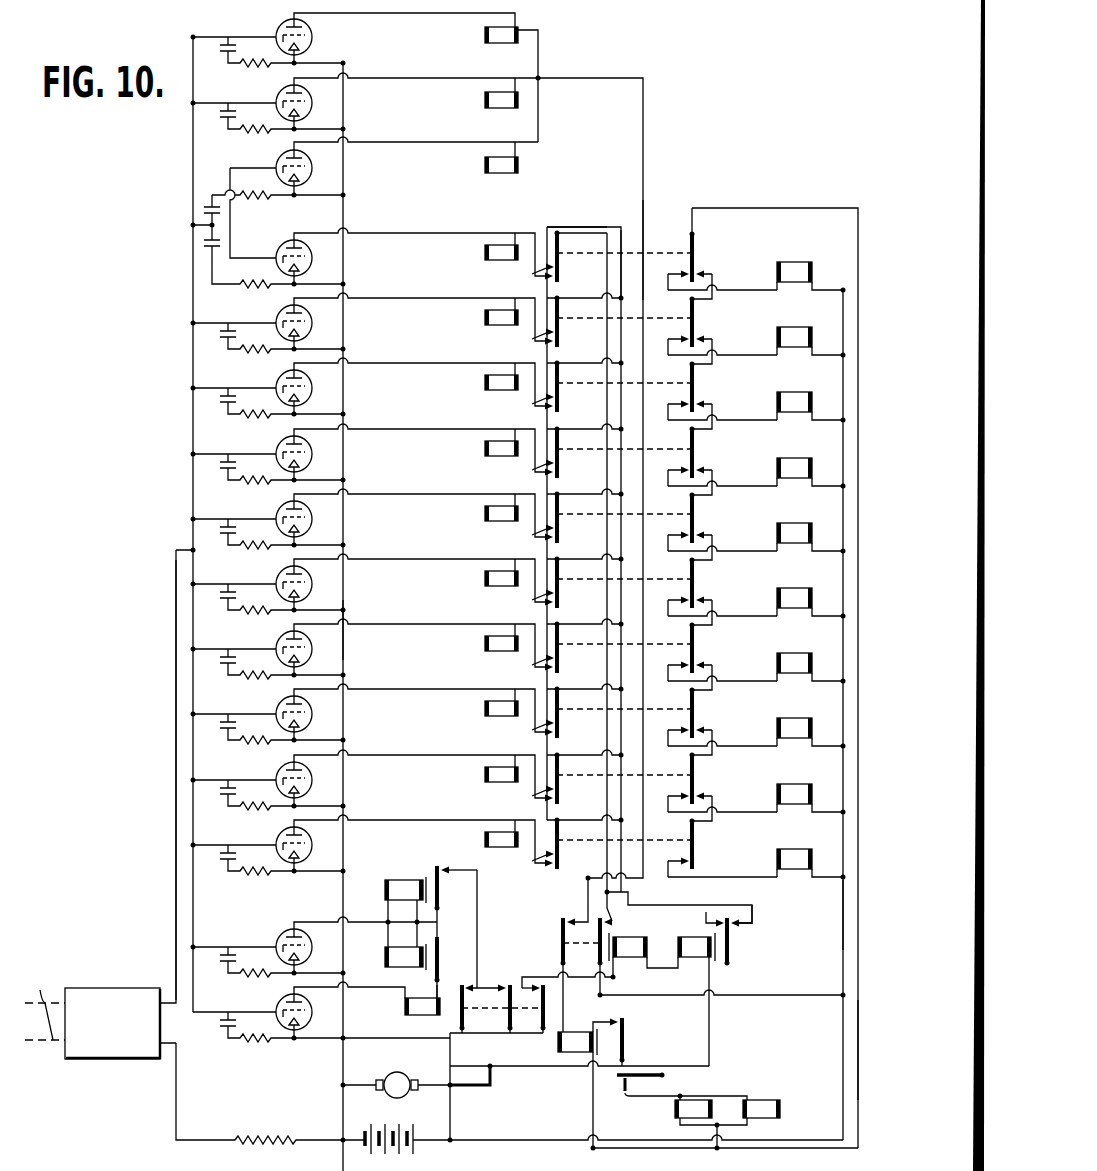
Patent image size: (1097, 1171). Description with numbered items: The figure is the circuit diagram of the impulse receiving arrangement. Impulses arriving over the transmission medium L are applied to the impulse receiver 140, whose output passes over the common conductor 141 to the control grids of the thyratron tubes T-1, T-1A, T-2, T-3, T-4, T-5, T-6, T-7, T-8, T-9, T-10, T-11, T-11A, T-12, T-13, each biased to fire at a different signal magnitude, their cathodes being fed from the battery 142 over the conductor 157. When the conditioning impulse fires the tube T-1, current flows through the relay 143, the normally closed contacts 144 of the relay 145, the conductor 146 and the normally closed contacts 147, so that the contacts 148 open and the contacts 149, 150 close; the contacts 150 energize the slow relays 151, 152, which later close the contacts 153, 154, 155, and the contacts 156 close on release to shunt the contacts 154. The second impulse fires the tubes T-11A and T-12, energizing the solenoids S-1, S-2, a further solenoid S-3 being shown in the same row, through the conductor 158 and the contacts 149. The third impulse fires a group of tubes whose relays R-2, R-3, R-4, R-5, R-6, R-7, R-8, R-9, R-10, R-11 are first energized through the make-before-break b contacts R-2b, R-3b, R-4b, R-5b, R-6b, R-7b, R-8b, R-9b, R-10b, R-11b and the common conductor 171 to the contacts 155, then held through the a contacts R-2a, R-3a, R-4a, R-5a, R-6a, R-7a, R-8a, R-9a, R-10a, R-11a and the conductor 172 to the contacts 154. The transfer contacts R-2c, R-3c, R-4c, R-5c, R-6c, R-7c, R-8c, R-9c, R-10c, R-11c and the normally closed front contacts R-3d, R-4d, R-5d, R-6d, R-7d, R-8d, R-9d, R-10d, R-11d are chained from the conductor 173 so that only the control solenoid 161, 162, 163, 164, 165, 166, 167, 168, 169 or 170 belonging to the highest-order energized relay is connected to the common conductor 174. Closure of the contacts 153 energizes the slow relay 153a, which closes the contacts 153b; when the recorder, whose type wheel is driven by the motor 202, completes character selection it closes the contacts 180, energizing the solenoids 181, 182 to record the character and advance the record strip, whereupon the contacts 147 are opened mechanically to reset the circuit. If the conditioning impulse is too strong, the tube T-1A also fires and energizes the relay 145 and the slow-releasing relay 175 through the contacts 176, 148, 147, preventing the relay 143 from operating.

The impulse receiver 140 is at (111, 1000).
The common conductor 141 is at (176, 612).
The battery 142 is at (392, 1152).
The relay 143 is at (410, 1012).
The normally closed contacts 144 is at (440, 937).
The relay 145 is at (400, 956).
The conductor 146 is at (447, 1012).
The normally closed contacts 147 is at (500, 1080).
The contacts 148 is at (465, 985).
The contacts 149 is at (504, 985).
The contacts 150 is at (540, 973).
The relay 151 is at (636, 945).
The relay 152 is at (692, 945).
The contacts 153 is at (577, 915).
The relay 153a is at (568, 1043).
The contacts 153b is at (615, 1017).
The contacts 154 is at (610, 916).
The contacts 155 is at (727, 932).
The contacts 156 is at (740, 927).
The conductor 157 is at (343, 636).
The conductor 158 is at (645, 134).
The control solenoid 161 is at (795, 859).
The control solenoid 162 is at (795, 794).
The control solenoid 163 is at (795, 728).
The control solenoid 164 is at (795, 663).
The control solenoid 165 is at (795, 598).
The control solenoid 166 is at (795, 533).
The control solenoid 167 is at (795, 468).
The control solenoid 168 is at (795, 402).
The control solenoid 169 is at (795, 337).
The control solenoid 170 is at (795, 272).
The common conductor 171 is at (625, 243).
The conductor 172 is at (607, 246).
The conductor 173 is at (858, 1042).
The common conductor 174 is at (843, 905).
The relay 175 is at (400, 888).
The contacts 176 is at (437, 866).
The contacts 180 is at (617, 1083).
The solenoid 181 is at (702, 1110).
The solenoid 182 is at (765, 1110).
The motor 202 is at (396, 1072).
The transmission medium L is at (45, 1006).
The electron discharge device T-1 is at (279, 1006).
The electron discharge device T-1A is at (279, 941).
The electron discharge device T-2 is at (279, 839).
The electron discharge device T-3 is at (279, 774).
The electron discharge device T-4 is at (279, 708).
The electron discharge device T-5 is at (279, 643).
The electron discharge device T-6 is at (279, 578).
The electron discharge device T-7 is at (279, 513).
The electron discharge device T-8 is at (279, 448).
The electron discharge device T-9 is at (279, 382).
The electron discharge device T-10 is at (279, 317).
The electron discharge device T-11 is at (279, 252).
The electron discharge device T-11A is at (279, 162).
The electron discharge device T-12 is at (279, 97).
The electron discharge device T-13 is at (279, 31).
The solenoid S-1 is at (485, 167).
The solenoid S-2 is at (485, 102).
The relay S-3 is at (485, 37).
The relay R-2 is at (485, 839).
The relay R-3 is at (485, 774).
The relay R-4 is at (485, 708).
The relay R-5 is at (485, 643).
The relay R-6 is at (485, 578).
The relay R-7 is at (485, 513).
The relay R-8 is at (485, 448).
The relay R-9 is at (485, 382).
The relay R-10 is at (485, 317).
The relay R-11 is at (485, 252).
The a contacts R-2a is at (623, 844).
The b contacts R-2b is at (522, 862).
The transfer contacts R-2c is at (687, 858).
The a contacts R-3a is at (623, 779).
The b contacts R-3b is at (522, 797).
The transfer contacts R-3c is at (687, 793).
The front contacts R-3d is at (700, 792).
The a contacts R-4a is at (623, 713).
The b contacts R-4b is at (522, 731).
The transfer contacts R-4c is at (687, 727).
The front contacts R-4d is at (700, 726).
The a contacts R-5a is at (623, 648).
The b contacts R-5b is at (522, 666).
The transfer contacts R-5c is at (687, 662).
The front contacts R-5d is at (700, 661).
The a contacts R-6a is at (623, 583).
The b contacts R-6b is at (522, 601).
The transfer contacts R-6c is at (687, 597).
The front contacts R-6d is at (700, 596).
The a contacts R-7a is at (623, 518).
The b contacts R-7b is at (522, 536).
The transfer contacts R-7c is at (687, 532).
The front contacts R-7d is at (700, 531).
The a contacts R-8a is at (623, 453).
The b contacts R-8b is at (522, 471).
The transfer contacts R-8c is at (687, 467).
The front contacts R-8d is at (700, 466).
The a contacts R-9a is at (623, 387).
The b contacts R-9b is at (522, 405).
The transfer contacts R-9c is at (687, 401).
The front contacts R-9d is at (700, 400).
The a contacts R-10a is at (623, 322).
The b contacts R-10b is at (520, 340).
The transfer contacts R-10c is at (687, 336).
The front contacts R-10d is at (700, 335).
The a contacts R-11a is at (623, 257).
The b contacts R-11b is at (520, 275).
The transfer contacts R-11c is at (687, 271).
The front contacts R-11d is at (700, 270).